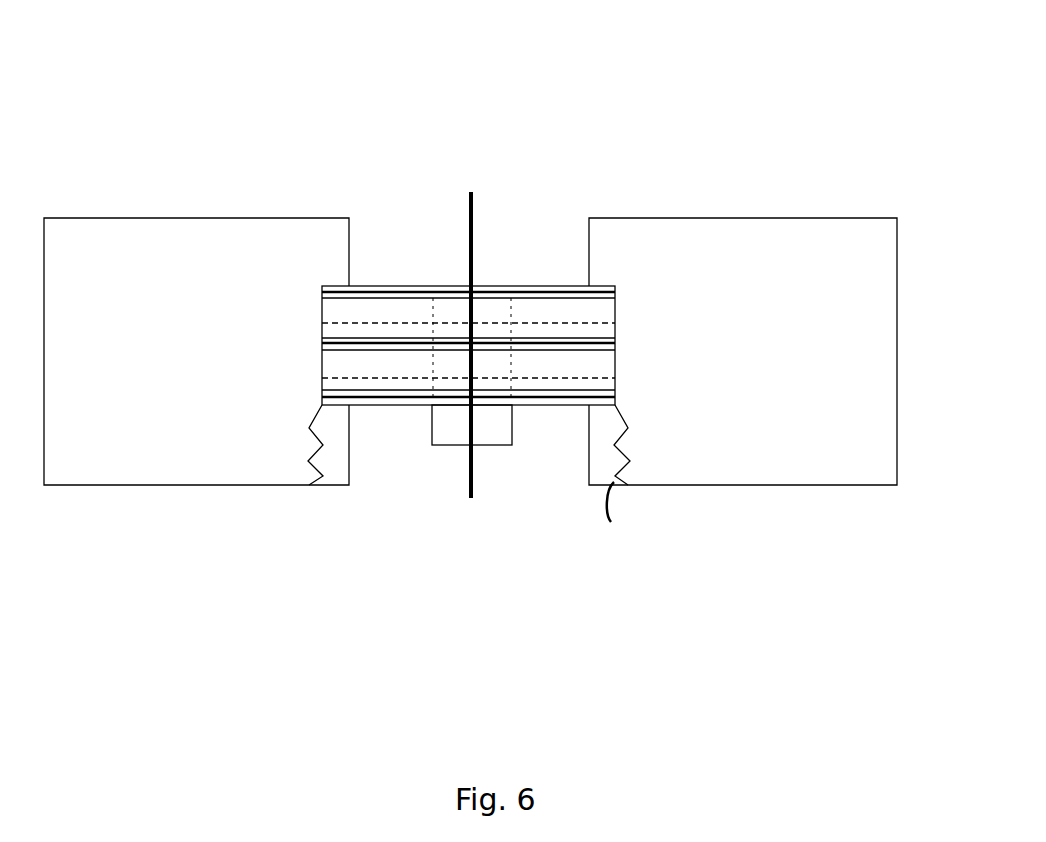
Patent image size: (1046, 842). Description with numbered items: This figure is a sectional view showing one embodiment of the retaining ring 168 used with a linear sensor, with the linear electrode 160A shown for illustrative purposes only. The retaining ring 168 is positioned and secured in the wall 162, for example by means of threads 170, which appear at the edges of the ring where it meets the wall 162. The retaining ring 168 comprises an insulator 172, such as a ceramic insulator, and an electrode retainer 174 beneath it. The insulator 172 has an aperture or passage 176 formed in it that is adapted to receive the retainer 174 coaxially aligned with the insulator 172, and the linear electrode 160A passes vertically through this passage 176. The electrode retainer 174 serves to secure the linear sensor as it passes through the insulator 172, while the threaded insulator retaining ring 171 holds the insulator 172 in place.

The retaining ring 168 is at (510, 75).
The wall 162 is at (195, 376).
The insulator 172 is at (510, 286).
The linear electrode 160A is at (473, 198).
The aperture or passage 176 is at (468, 288).
The electrode retainer 174 is at (432, 432).
The threads 170 is at (623, 432).
The threaded insulator retaining ring 171 is at (636, 513).